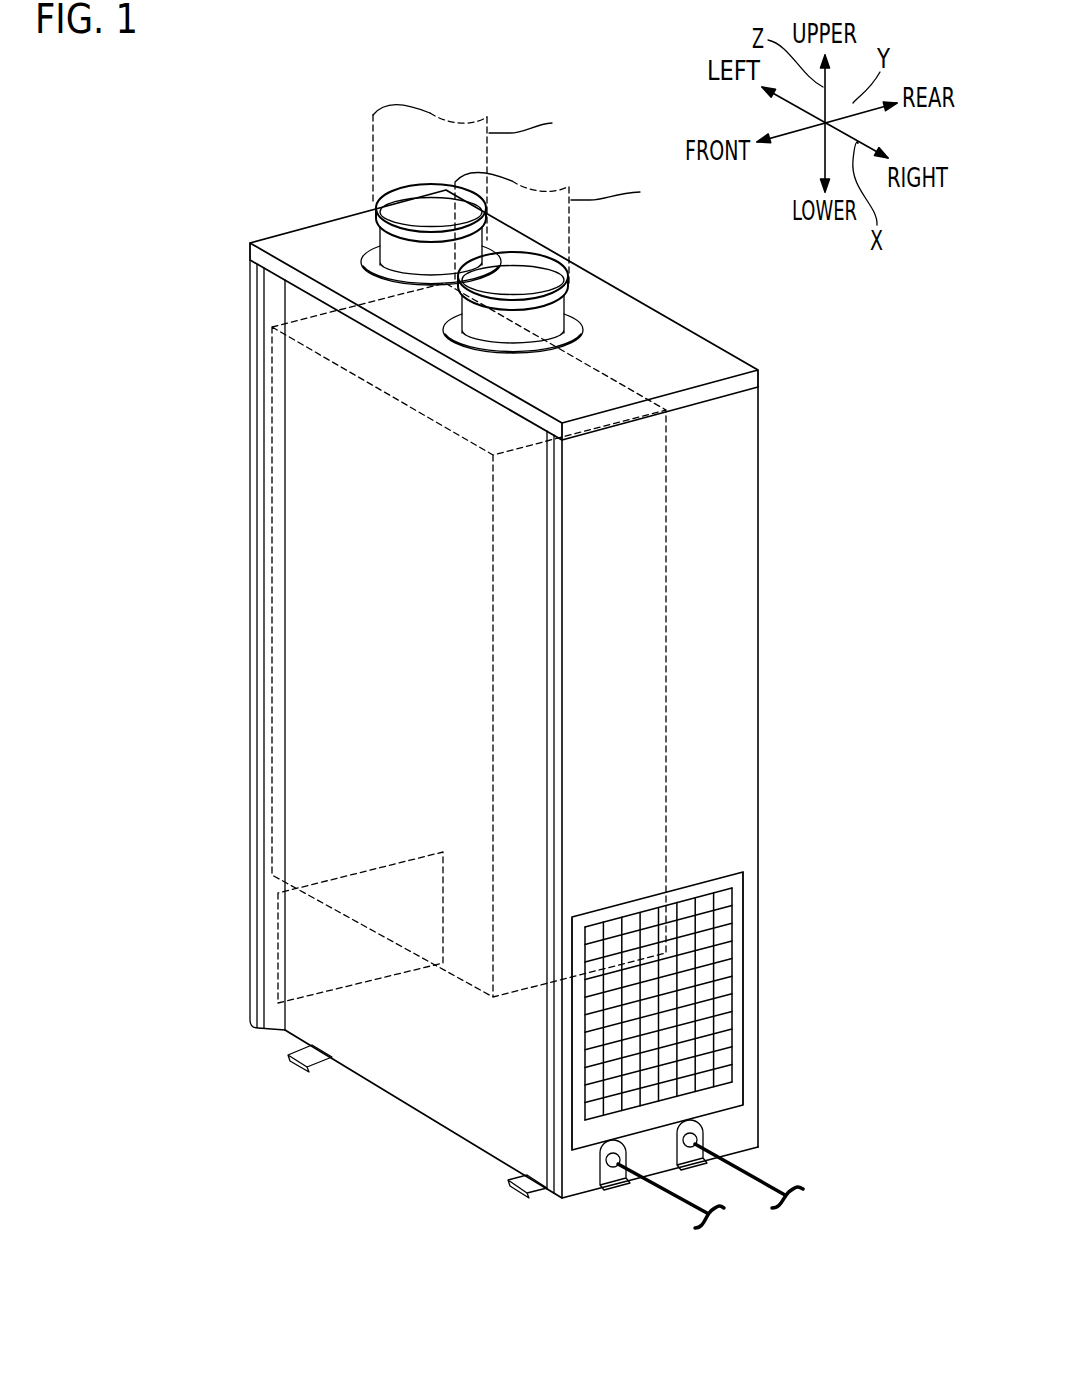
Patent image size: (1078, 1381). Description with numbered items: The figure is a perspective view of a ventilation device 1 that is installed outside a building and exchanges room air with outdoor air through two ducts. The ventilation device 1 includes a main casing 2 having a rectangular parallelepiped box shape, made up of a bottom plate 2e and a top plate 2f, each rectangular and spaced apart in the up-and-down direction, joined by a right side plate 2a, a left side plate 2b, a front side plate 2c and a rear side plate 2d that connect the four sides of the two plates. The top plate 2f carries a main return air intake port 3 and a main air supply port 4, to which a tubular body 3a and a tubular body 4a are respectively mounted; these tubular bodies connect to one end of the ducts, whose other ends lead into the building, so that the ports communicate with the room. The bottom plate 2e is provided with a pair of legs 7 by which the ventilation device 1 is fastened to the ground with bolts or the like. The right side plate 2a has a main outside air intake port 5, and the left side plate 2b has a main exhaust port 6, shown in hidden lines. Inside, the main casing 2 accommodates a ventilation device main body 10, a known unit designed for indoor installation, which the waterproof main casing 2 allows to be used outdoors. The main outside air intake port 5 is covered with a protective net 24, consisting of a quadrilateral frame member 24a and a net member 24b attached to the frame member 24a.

The ventilation device 1 is at (227, 237).
The main casing 2 is at (247, 307).
The right side plate 2a is at (697, 520).
The left side plate 2b is at (250, 468).
The front side plate 2c is at (314, 519).
The rear side plate 2d is at (760, 470).
The bottom plate 2e is at (448, 1127).
The top plate 2f is at (697, 348).
The main return air intake port 3 is at (400, 268).
The tubular body 3a is at (393, 190).
The main air supply port 4 is at (585, 305).
The tubular body 4a is at (566, 290).
The main outside air intake port 5 is at (722, 957).
The main exhaust port 6 is at (272, 940).
The legs 7 is at (295, 1058).
The ventilation device main body 10 is at (270, 405).
The protective net 24 is at (850, 975).
The frame member 24a is at (745, 985).
The net member 24b is at (705, 1030).